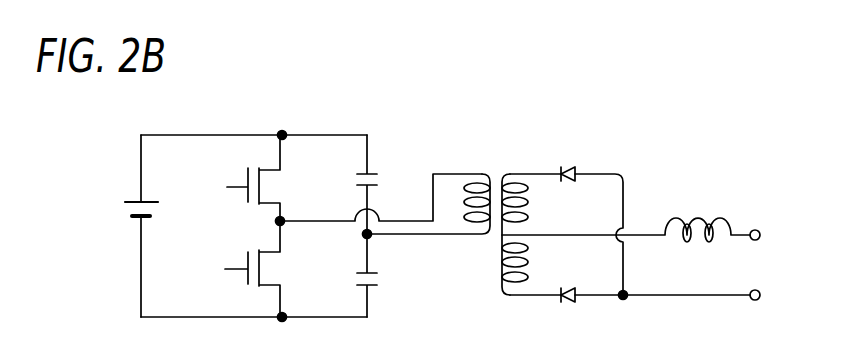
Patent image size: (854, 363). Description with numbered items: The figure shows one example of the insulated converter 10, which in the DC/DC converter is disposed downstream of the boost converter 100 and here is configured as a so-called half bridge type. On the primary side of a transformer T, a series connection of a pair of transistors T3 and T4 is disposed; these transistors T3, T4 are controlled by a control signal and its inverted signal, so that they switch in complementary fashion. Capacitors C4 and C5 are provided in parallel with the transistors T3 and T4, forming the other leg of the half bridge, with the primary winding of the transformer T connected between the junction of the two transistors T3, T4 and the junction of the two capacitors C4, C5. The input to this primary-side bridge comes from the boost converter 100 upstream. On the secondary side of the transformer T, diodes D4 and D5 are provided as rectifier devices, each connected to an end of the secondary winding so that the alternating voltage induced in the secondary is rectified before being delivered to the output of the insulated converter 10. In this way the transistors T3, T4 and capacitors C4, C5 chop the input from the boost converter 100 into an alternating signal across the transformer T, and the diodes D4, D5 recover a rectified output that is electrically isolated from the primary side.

The insulated converter 10 is at (450, 184).
The boost converter 100 is at (124, 210).
The transistor T3 is at (249, 178).
The transistor T4 is at (247, 269).
The capacitor C4 is at (381, 184).
The capacitor C5 is at (381, 275).
The transformer T is at (496, 170).
The diode D4 is at (566, 217).
The diode D5 is at (630, 311).